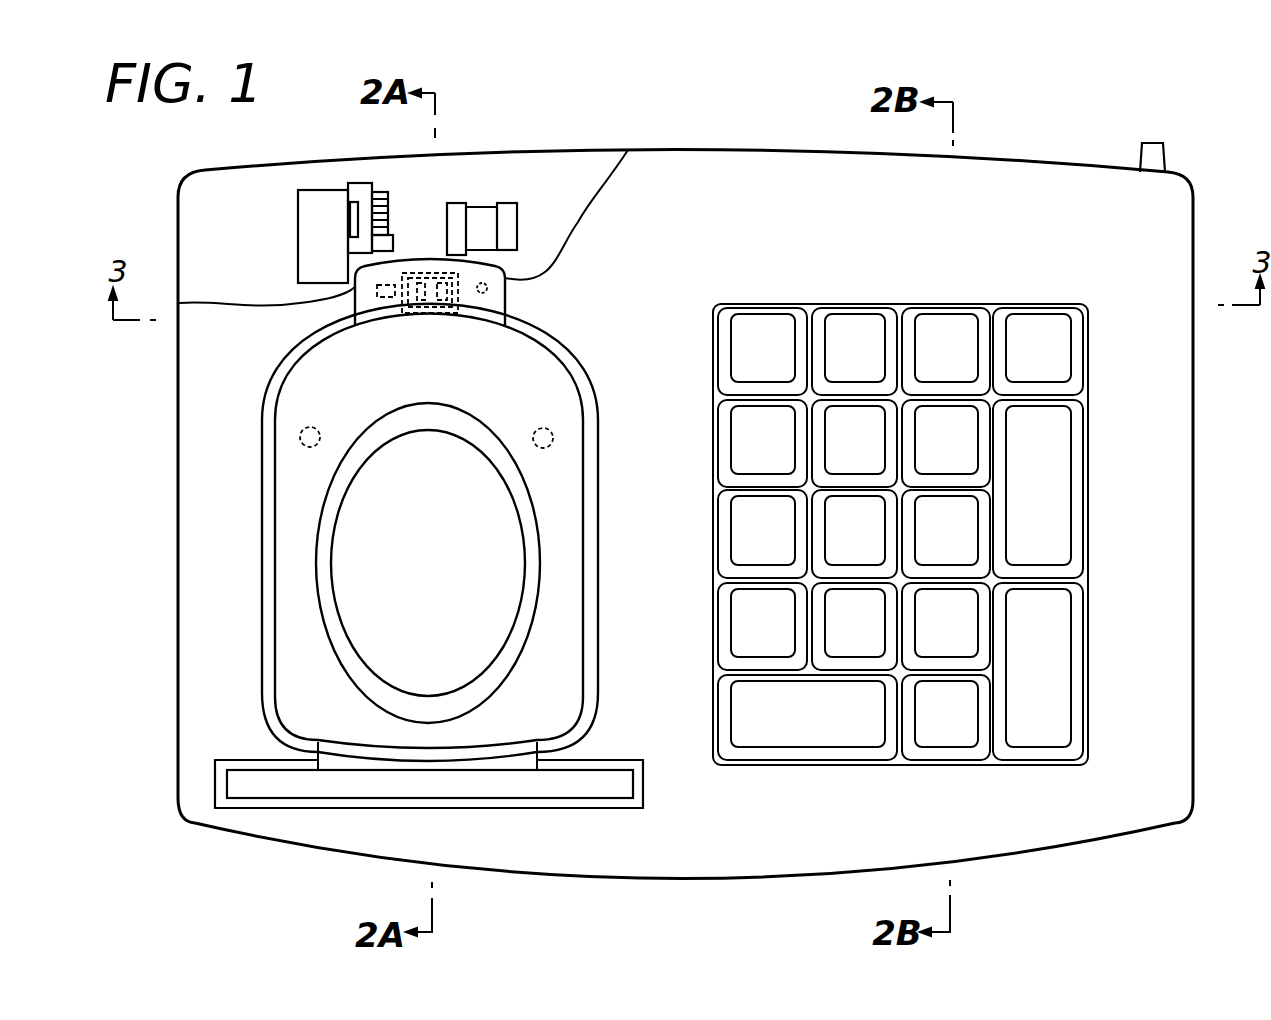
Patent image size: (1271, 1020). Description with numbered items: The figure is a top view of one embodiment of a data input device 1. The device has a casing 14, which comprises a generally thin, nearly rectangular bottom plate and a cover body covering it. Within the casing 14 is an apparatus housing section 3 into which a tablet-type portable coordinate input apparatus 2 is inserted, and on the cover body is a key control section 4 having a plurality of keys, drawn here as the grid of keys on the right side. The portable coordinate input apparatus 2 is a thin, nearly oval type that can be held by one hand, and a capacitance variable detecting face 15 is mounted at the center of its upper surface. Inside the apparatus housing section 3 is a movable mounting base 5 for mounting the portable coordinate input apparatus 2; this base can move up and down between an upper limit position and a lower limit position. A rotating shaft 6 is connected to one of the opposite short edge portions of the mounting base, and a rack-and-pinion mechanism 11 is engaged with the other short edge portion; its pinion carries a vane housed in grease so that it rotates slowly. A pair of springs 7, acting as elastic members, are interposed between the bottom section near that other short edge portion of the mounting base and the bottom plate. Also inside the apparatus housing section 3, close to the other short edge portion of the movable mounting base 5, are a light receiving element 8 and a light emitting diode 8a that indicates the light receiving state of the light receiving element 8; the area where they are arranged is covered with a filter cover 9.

The data input device 1 is at (1140, 520).
The portable coordinate input apparatus 2 is at (262, 533).
The apparatus housing section 3 is at (268, 397).
The key control section 4 is at (898, 766).
The movable mounting base 5 is at (565, 733).
The rotating shaft 6 is at (337, 790).
The springs 7 is at (300, 443).
The light receiving element 8 is at (383, 297).
The light emitting diode 8a is at (487, 290).
The filter cover 9 is at (500, 279).
The rack-and-pinion mechanism 11 is at (378, 190).
The casing 14 is at (758, 868).
The capacitance variable detecting face 15 is at (353, 588).